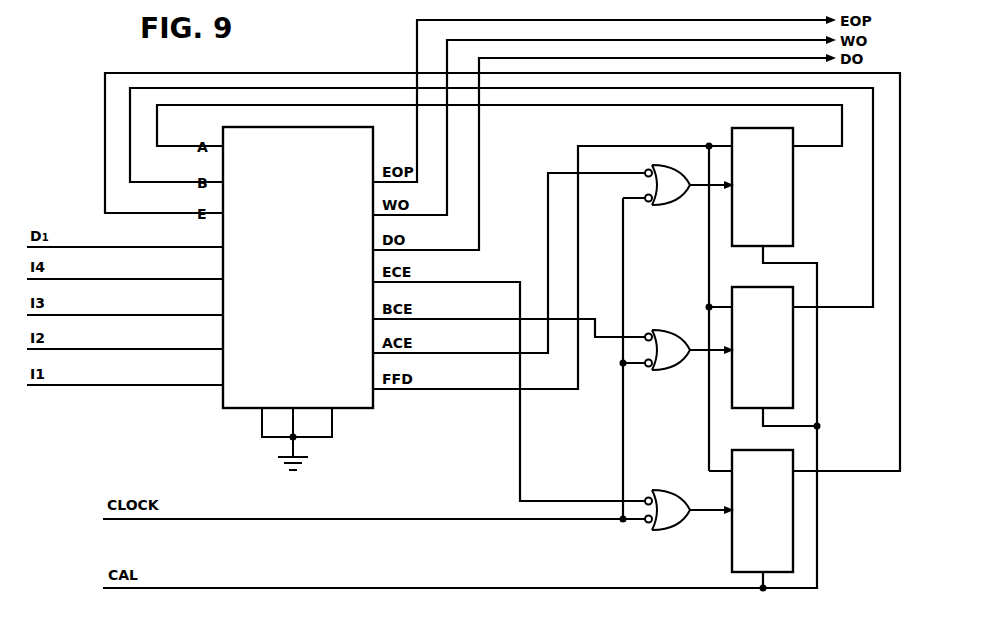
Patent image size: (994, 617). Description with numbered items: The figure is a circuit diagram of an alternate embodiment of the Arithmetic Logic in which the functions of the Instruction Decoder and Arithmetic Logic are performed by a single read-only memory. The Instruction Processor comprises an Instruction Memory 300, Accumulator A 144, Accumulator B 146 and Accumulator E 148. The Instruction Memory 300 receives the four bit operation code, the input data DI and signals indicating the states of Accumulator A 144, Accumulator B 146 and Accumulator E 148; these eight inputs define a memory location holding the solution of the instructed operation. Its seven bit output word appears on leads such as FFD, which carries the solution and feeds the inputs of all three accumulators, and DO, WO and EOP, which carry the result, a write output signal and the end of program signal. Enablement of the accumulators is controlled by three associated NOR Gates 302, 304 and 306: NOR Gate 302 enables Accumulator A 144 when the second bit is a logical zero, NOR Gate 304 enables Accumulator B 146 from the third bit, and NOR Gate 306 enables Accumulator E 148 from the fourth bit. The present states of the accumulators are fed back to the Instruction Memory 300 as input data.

The Instruction Memory 300 is at (232, 410).
The NOR Gate 302 is at (672, 206).
The NOR Gate 304 is at (670, 372).
The NOR Gate 306 is at (678, 531).
The Accumulator A 144 is at (778, 210).
The Accumulator B 146 is at (772, 372).
The Accumulator E 148 is at (780, 528).